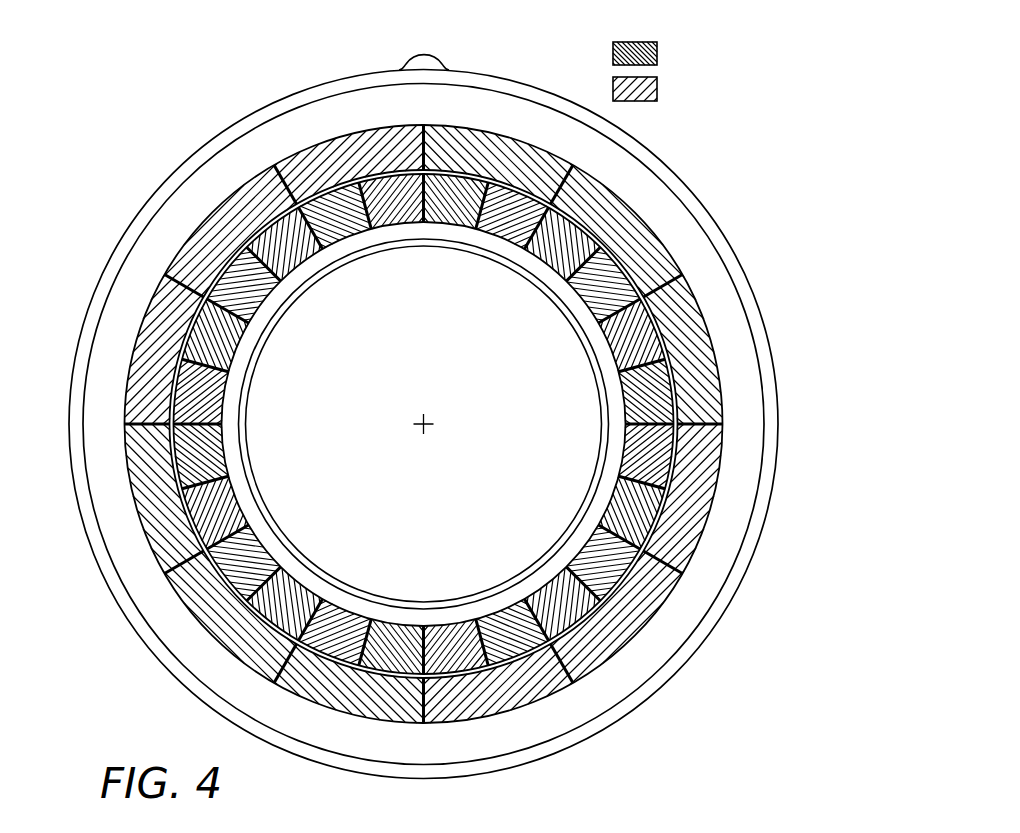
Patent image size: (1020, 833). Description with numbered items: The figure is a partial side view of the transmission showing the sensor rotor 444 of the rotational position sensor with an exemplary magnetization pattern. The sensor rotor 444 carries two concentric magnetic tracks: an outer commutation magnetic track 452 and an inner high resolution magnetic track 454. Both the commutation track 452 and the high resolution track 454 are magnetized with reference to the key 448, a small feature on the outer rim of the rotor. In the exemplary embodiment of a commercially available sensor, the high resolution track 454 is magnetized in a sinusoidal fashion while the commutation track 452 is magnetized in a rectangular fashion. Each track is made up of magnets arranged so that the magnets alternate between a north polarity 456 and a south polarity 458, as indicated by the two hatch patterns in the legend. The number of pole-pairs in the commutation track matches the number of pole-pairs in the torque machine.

The sensor rotor 444 is at (146, 176).
The key 448 is at (405, 58).
The commutation magnetic track 452 is at (645, 217).
The high resolution magnetic track 454 is at (672, 347).
The north polarity 456 is at (656, 55).
The south polarity 458 is at (656, 90).